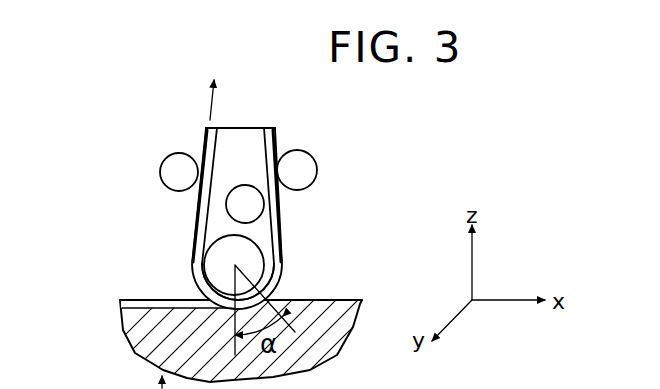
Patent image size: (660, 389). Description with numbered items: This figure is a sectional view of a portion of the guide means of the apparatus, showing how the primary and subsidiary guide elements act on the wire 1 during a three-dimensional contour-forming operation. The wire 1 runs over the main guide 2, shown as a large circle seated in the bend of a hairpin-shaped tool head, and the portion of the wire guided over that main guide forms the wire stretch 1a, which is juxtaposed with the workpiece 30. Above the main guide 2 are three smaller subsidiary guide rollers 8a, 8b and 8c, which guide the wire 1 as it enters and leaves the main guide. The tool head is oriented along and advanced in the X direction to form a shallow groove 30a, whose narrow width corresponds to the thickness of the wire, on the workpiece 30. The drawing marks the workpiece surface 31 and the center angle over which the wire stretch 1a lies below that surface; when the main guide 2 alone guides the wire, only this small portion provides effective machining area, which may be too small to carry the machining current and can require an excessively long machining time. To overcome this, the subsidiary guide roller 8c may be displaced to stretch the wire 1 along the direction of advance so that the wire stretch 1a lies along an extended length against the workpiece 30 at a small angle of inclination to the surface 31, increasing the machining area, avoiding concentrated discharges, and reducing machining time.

The wire 1 is at (276, 223).
The wire stretch 1a is at (262, 264).
The main guide 2 is at (218, 258).
The subsidiary guide roller 8a is at (305, 165).
The subsidiary guide roller 8b is at (173, 163).
The subsidiary guide roller 8c is at (250, 192).
The workpiece 30 is at (350, 305).
The groove 30a is at (140, 305).
The workpiece surface 31 is at (303, 300).